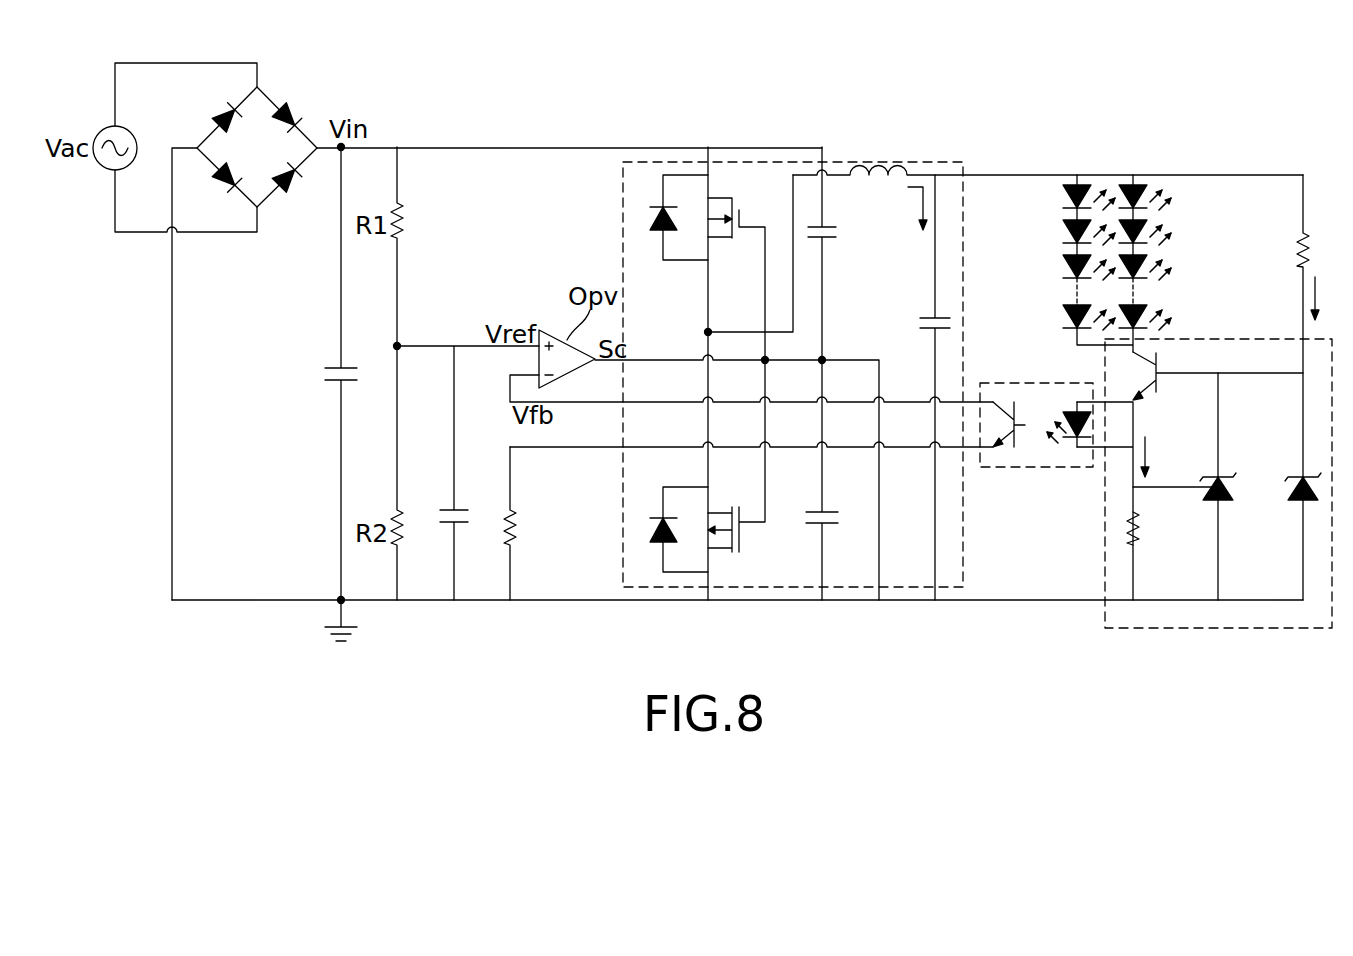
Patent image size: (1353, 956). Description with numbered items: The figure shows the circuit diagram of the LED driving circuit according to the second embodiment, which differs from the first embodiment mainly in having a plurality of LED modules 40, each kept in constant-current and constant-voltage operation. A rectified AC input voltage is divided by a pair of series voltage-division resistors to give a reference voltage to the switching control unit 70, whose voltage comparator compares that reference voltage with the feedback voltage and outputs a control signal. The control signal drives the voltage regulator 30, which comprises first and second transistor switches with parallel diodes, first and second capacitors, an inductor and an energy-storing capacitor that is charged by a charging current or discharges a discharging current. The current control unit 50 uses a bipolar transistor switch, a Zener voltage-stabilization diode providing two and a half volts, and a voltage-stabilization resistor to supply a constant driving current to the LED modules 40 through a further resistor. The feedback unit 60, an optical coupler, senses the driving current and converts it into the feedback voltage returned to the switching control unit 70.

The voltage regulator 30 is at (908, 162).
The LED module 40 is at (1172, 218).
The current control unit 50 is at (1218, 340).
The feedback unit 60 is at (1037, 383).
The switching control unit 70 is at (475, 327).